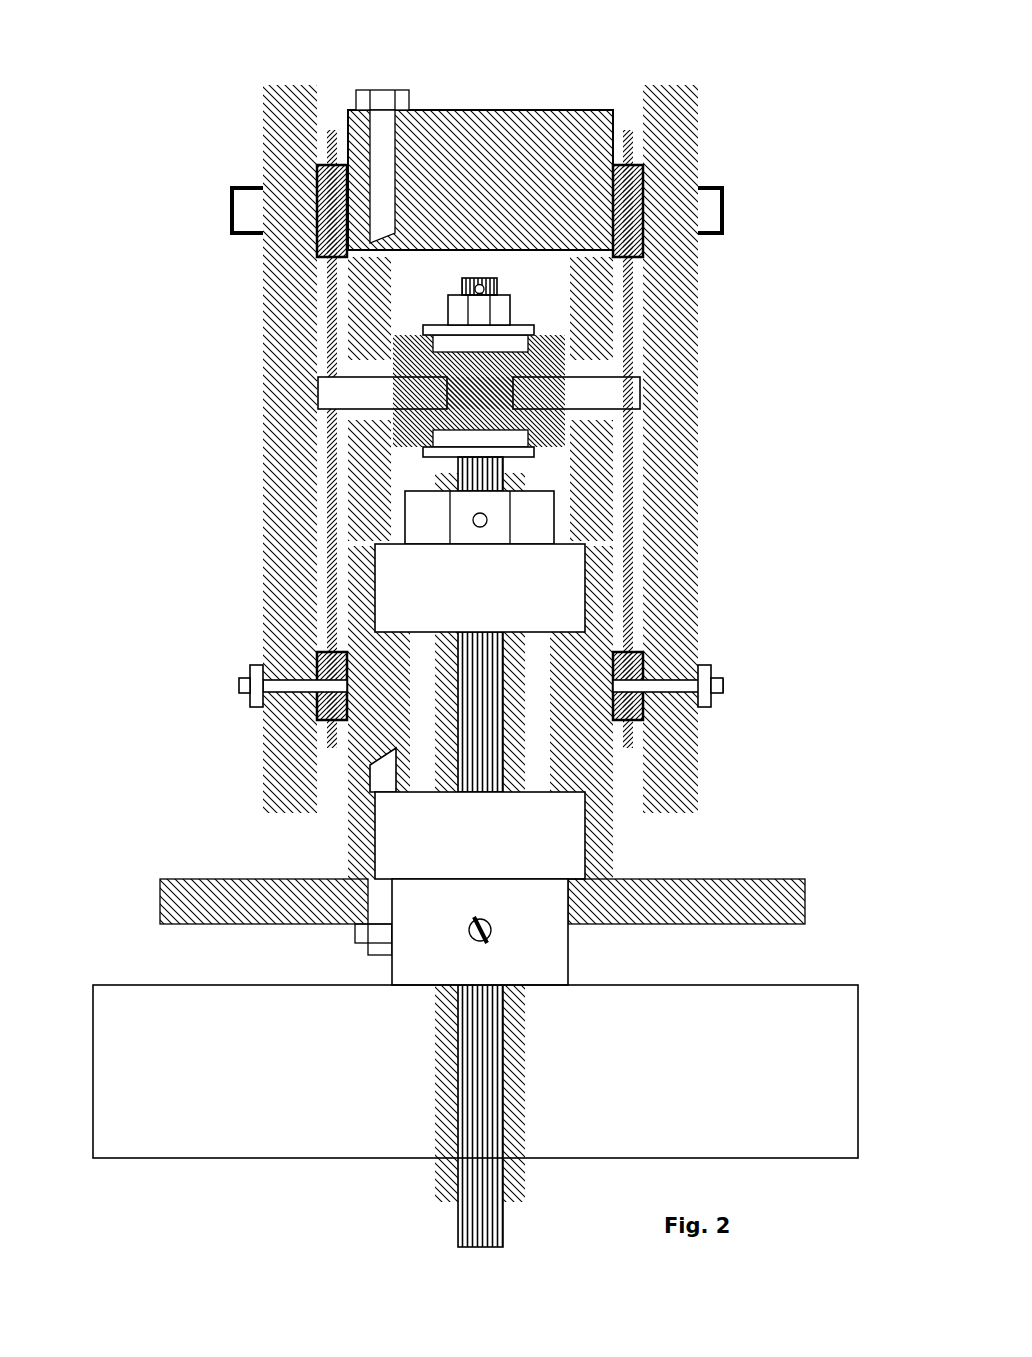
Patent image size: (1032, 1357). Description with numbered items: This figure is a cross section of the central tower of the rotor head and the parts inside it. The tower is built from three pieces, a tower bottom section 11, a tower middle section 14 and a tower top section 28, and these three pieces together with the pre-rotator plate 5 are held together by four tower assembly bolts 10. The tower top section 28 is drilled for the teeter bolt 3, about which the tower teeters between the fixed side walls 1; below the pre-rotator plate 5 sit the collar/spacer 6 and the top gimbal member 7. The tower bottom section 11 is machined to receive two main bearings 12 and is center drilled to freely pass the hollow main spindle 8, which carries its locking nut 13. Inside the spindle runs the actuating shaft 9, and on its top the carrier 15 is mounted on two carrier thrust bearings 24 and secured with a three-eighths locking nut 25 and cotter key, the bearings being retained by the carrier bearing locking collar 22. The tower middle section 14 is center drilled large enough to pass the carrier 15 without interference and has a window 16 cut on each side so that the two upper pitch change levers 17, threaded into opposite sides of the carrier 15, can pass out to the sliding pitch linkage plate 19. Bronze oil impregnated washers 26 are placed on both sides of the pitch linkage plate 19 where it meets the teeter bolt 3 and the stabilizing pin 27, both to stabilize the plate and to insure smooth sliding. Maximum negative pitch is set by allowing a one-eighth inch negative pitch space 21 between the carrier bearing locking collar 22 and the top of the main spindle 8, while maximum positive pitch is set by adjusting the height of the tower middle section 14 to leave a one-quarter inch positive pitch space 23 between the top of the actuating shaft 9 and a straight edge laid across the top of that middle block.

The fixed side walls 1 is at (676, 151).
The teeter bolt 3 is at (727, 184).
The pre-rotator plate 5 is at (165, 862).
The collar/spacer 6 is at (530, 948).
The top gimbal member 7 is at (137, 975).
The hollow main spindle 8 is at (430, 480).
The actuating shaft 9 is at (440, 1232).
The tower assembly bolts 10 is at (387, 86).
The tower bottom section 11 is at (400, 693).
The main bearings 12 is at (425, 600).
The locking nut 13 is at (420, 522).
The tower middle section 14 is at (385, 321).
The carrier 15 is at (495, 388).
The window 16 is at (375, 370).
The upper pitch change levers 17 is at (432, 403).
The pitch linkage plate 19 is at (332, 124).
The negative pitch space 21 is at (530, 471).
The carrier bearing locking collar 22 is at (533, 455).
The positive pitch space 23 is at (500, 265).
The carrier thrust bearings 24 is at (515, 345).
The locking nut 25 is at (478, 315).
The bronze oil impregnated washers 26 is at (625, 126).
The stabilizing pin 27 is at (727, 683).
The tower top section 28 is at (495, 163).